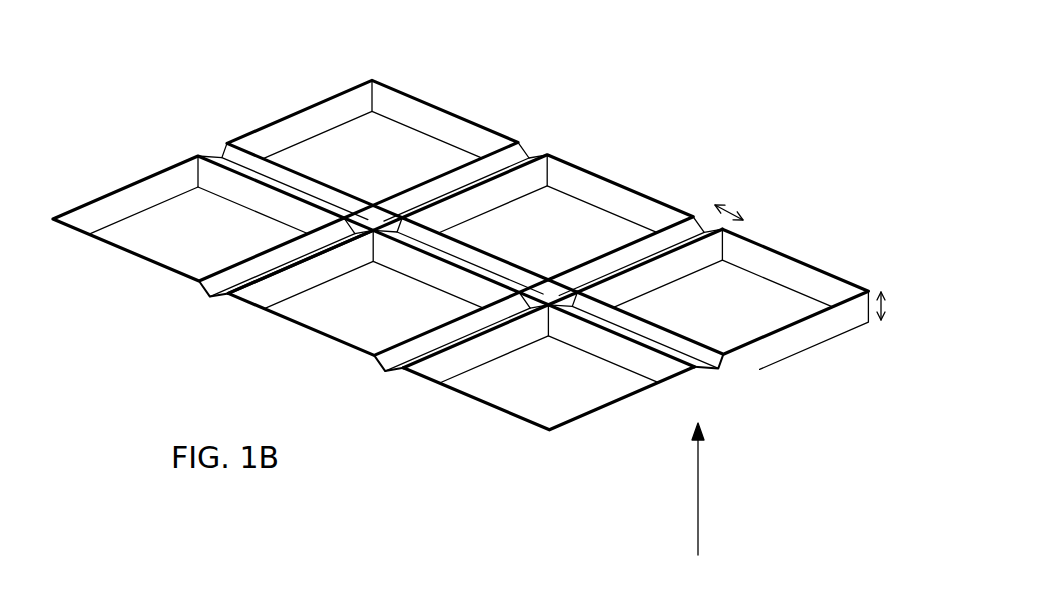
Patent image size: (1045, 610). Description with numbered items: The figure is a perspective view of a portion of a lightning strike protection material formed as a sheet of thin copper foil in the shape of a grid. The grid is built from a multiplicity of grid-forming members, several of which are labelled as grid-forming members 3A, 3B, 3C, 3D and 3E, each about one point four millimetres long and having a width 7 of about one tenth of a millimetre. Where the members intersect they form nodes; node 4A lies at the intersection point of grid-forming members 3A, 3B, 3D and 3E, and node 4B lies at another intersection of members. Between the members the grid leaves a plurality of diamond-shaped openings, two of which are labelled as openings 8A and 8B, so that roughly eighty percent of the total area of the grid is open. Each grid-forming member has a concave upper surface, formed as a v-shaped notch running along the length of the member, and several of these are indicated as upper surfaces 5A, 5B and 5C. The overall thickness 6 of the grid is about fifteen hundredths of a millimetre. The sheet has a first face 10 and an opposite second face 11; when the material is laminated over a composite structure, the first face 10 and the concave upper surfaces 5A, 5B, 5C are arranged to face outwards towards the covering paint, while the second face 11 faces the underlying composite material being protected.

The first face 10 is at (392, 128).
The grid-forming member 3A is at (640, 362).
The grid-forming member 3B is at (462, 365).
The grid-forming member 3C is at (287, 290).
The grid-forming member 3D is at (460, 248).
The grid-forming member 3E is at (685, 263).
The node 4A is at (548, 292).
The node 4B is at (373, 215).
The upper surface 5A is at (645, 328).
The upper surface 5B is at (398, 353).
The channel ramp 5C is at (212, 296).
The thickness 6 is at (900, 306).
The width 7 is at (735, 196).
The opening 8A is at (740, 290).
The opening 8B is at (553, 385).
The second face 11 is at (695, 507).